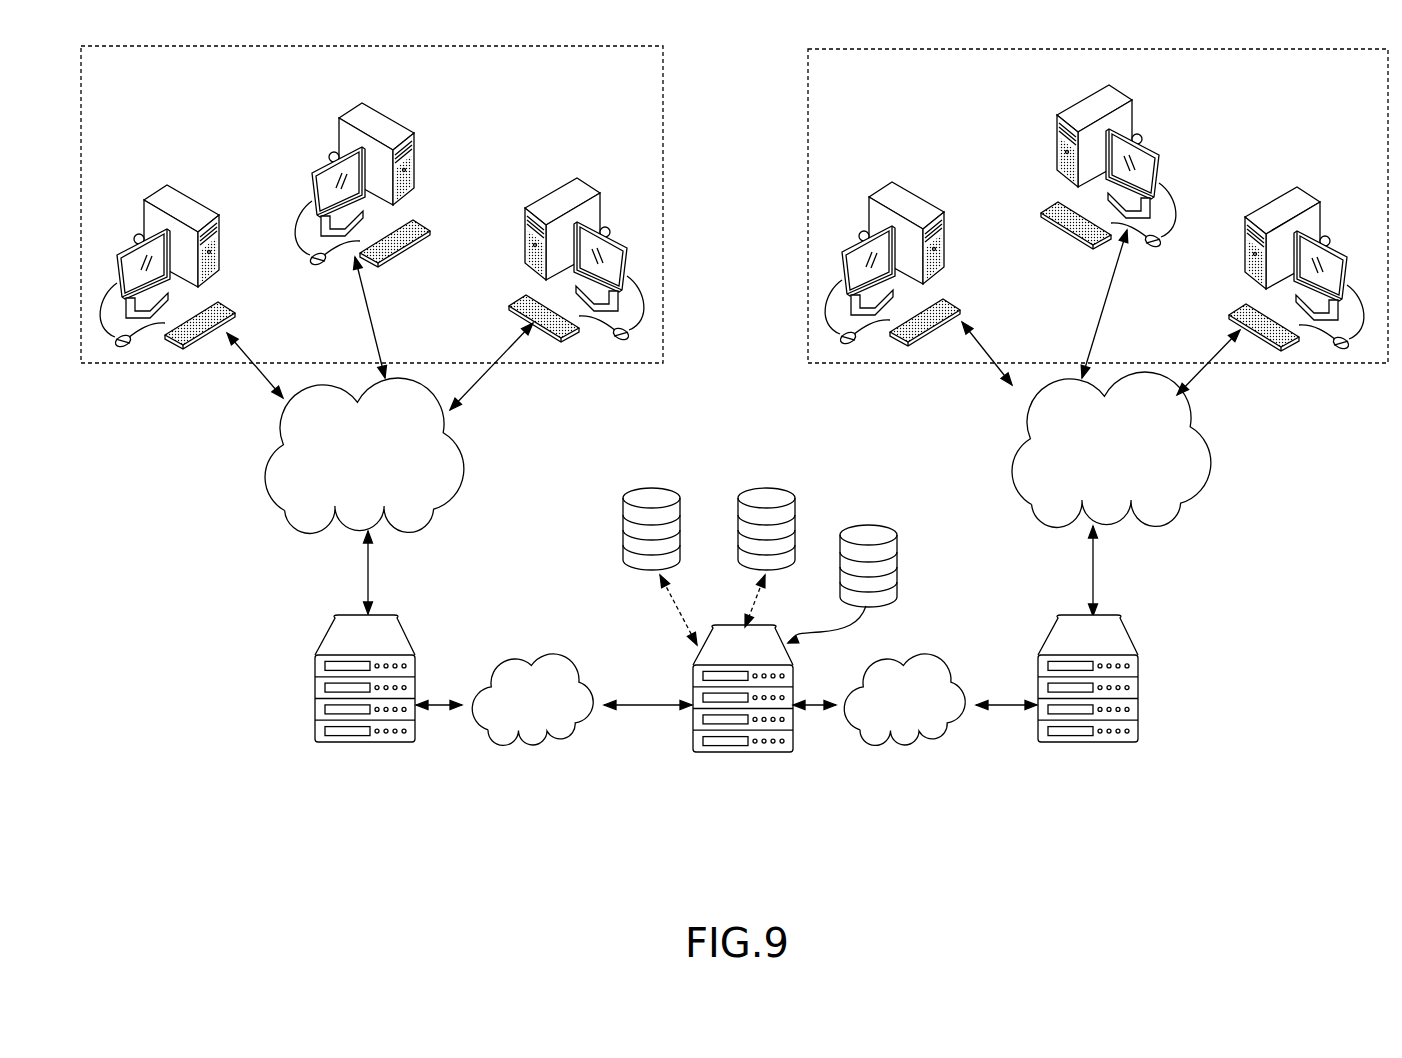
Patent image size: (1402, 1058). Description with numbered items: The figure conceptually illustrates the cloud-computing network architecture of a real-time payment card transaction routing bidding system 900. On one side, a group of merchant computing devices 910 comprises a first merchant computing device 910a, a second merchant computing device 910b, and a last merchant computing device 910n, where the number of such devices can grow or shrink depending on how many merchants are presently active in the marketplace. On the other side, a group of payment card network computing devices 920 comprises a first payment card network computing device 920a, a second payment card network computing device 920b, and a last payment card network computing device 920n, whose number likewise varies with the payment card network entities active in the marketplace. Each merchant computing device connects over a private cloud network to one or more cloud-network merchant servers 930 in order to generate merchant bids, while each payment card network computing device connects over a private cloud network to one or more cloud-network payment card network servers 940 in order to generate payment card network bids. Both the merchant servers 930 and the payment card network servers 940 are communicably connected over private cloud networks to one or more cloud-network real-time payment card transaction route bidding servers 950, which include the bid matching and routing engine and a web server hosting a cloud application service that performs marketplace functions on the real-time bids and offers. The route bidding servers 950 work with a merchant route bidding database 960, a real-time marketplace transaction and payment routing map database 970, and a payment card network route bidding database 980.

The real-time payment card transaction routing bidding system 900 is at (570, 837).
The merchant computing devices 910 is at (126, 77).
The first merchant computing device 910a is at (152, 197).
The second merchant computing device 910b is at (417, 165).
The last merchant computing device 910n is at (582, 181).
The payment card network computing devices 920 is at (823, 77).
The first payment card network computing device 920a is at (880, 193).
The second payment card network computing device 920b is at (1153, 153).
The last payment card network computing device 920n is at (1313, 195).
The cloud-network merchant servers 930 is at (348, 646).
The cloud-network payment card network servers 940 is at (1069, 649).
The cloud-network real-time payment card transaction route bidding servers 950 is at (724, 660).
The merchant route bidding database 960 is at (623, 566).
The real-time marketplace transaction and payment routing map database 970 is at (738, 566).
The payment card network route bidding database 980 is at (890, 603).